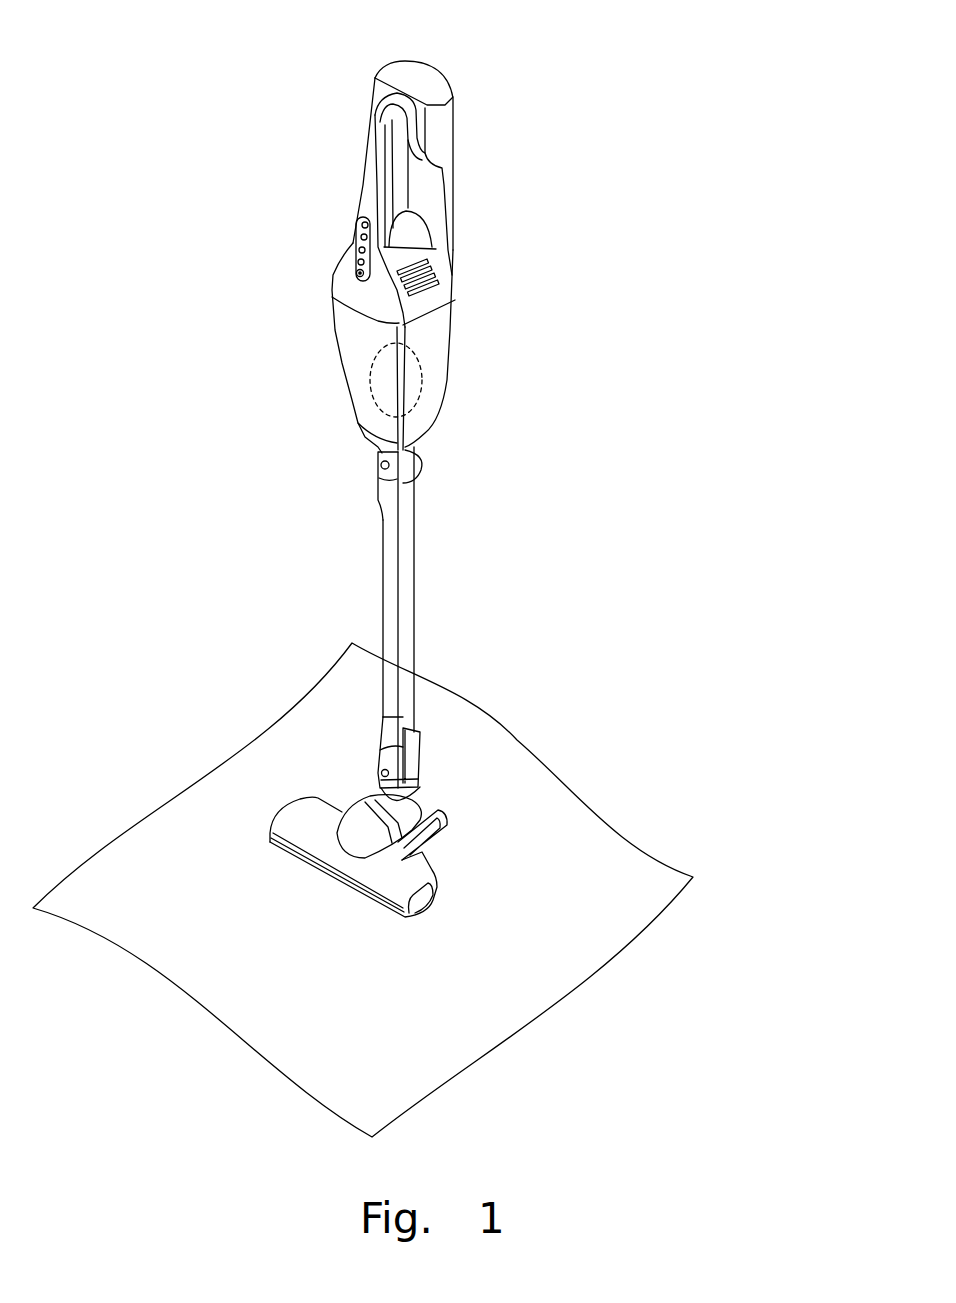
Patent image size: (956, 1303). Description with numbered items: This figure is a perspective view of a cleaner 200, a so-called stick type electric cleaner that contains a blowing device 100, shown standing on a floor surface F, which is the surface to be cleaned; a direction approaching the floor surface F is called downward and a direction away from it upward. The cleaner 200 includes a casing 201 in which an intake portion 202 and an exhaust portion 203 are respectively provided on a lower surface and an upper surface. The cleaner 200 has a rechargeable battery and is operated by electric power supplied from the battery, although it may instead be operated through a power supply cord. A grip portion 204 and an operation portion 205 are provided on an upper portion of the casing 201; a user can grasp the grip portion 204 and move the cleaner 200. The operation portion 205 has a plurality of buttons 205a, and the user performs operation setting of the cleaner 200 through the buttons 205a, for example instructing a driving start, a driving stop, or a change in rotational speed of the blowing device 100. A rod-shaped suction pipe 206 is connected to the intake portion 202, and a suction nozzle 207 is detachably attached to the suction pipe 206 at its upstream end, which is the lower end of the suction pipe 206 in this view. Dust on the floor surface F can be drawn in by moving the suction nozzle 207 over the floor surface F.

The cleaner 200 is at (560, 63).
The casing 201 is at (445, 340).
The intake portion 202 is at (425, 463).
The exhaust portion 203 is at (437, 279).
The grip portion 204 is at (372, 182).
The operation portion 205 is at (357, 240).
The buttons 205a is at (357, 274).
The suction pipe 206 is at (405, 609).
The suction nozzle 207 is at (328, 860).
The blowing device 100 is at (430, 371).
The floor surface F is at (562, 950).